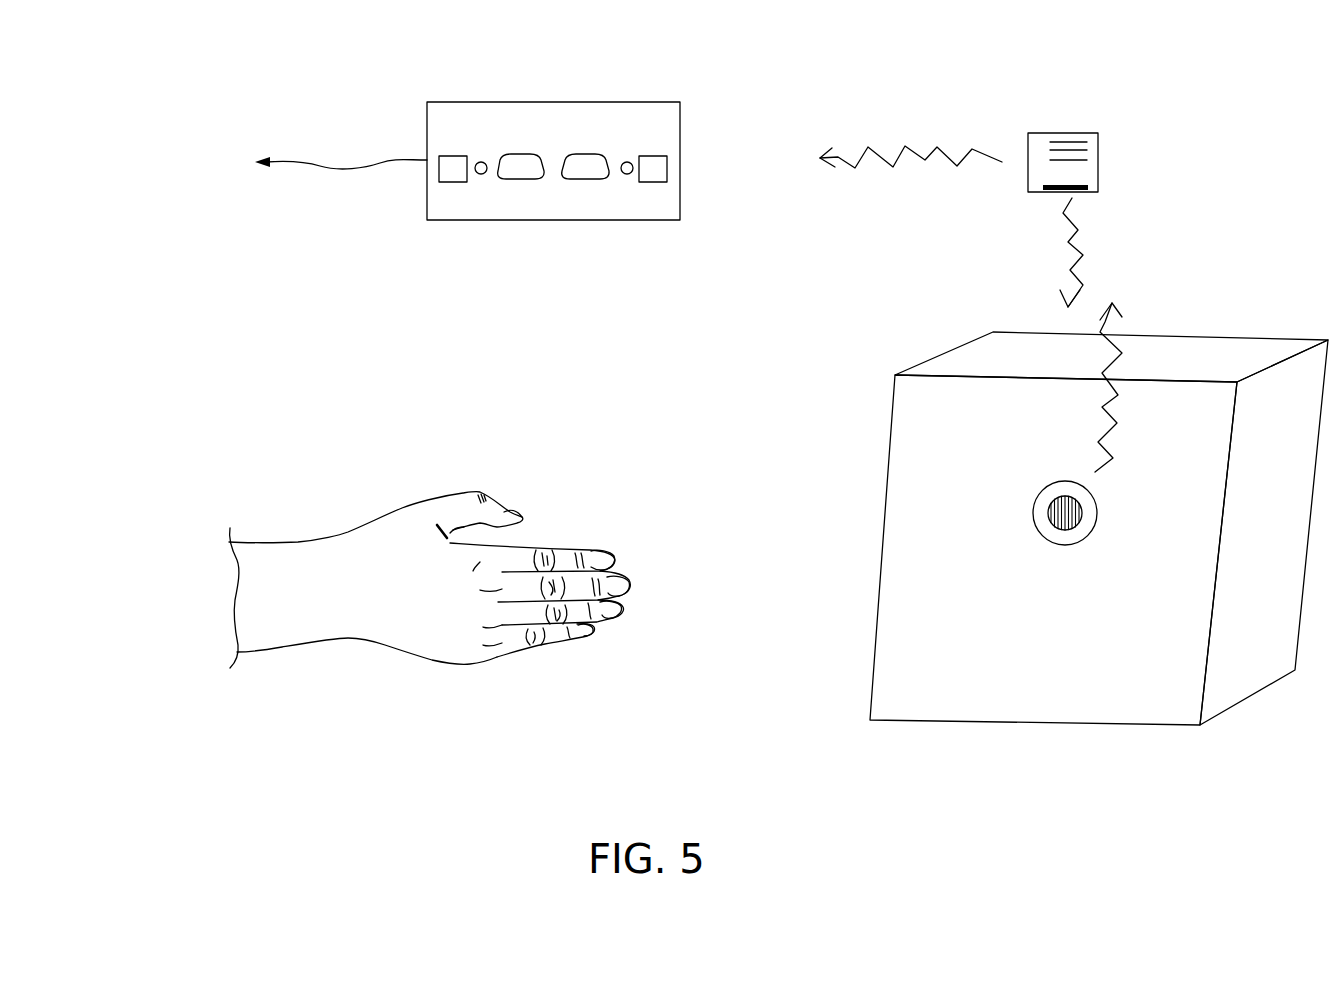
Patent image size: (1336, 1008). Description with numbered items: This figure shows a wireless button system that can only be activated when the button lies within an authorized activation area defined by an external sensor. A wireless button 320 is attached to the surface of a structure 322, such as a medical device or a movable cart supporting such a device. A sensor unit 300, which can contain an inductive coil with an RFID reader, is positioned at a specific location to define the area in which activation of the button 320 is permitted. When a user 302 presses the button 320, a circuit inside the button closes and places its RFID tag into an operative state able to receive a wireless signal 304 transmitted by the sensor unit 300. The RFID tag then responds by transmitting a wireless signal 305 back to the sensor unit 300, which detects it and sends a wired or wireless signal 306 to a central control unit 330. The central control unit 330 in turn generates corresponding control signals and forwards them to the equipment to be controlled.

The sensor unit 300 is at (1098, 160).
The user 302 is at (346, 522).
The wireless signal 304 is at (1085, 255).
The wireless signal 305 is at (1115, 358).
The signal 306 is at (898, 148).
The wireless button 320 is at (1097, 522).
The structure 322 is at (1022, 677).
The central control unit 330 is at (575, 220).